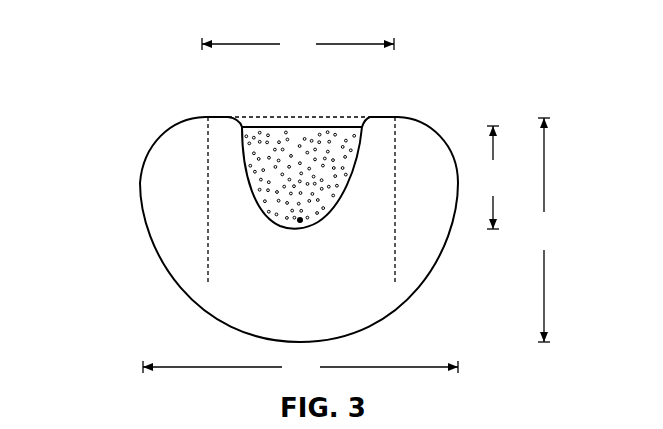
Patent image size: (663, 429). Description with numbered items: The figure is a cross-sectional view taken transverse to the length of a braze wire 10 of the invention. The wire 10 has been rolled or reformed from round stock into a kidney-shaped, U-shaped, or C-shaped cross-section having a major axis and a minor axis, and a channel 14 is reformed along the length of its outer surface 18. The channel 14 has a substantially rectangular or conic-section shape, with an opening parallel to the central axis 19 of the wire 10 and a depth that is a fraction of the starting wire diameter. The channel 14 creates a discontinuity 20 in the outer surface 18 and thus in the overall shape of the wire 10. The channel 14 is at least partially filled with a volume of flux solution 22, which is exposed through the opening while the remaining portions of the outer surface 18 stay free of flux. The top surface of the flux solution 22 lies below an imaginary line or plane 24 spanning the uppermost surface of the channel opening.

The wire 10 is at (86, 80).
The channel 14 is at (360, 125).
The outer surface 18 is at (442, 138).
The central axis 19 is at (302, 222).
The discontinuity 20 is at (363, 120).
The flux solution 22 is at (290, 137).
The imaginary line or plane 24 is at (228, 117).